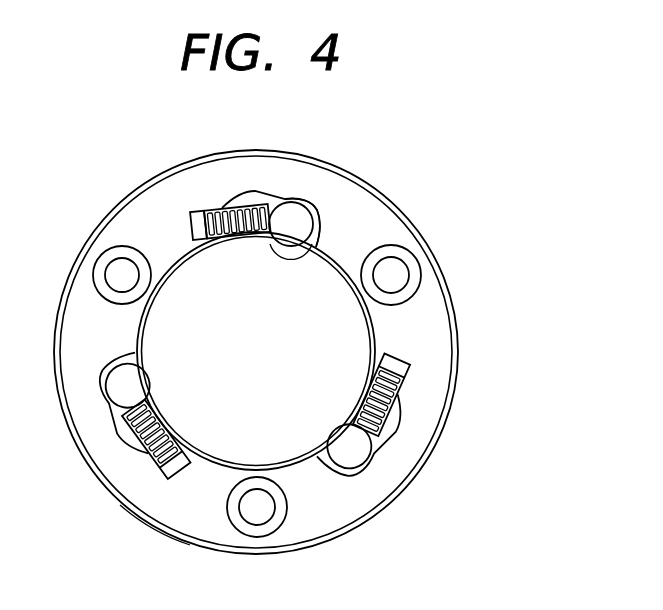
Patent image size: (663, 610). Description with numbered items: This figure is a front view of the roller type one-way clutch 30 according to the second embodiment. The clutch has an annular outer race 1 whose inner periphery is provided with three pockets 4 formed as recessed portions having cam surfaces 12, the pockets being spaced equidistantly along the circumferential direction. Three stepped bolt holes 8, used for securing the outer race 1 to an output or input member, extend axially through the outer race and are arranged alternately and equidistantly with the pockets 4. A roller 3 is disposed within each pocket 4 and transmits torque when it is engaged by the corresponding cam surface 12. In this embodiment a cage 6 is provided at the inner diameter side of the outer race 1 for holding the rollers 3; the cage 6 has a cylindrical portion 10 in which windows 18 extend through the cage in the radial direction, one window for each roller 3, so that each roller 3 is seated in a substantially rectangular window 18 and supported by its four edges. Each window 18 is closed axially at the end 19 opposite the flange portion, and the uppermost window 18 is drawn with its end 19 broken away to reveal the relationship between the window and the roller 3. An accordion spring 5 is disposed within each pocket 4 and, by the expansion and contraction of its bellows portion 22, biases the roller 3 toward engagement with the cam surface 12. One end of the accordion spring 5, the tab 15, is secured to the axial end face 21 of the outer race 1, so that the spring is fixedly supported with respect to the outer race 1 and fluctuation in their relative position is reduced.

The outer race 1 is at (131, 217).
The roller 3 is at (292, 203).
The pocket 4 is at (262, 196).
The accordion spring 5 is at (237, 208).
The cage 6 is at (375, 330).
The bolt hole 8 is at (272, 518).
The cylindrical portion 10 is at (170, 283).
The cam surface 12 is at (317, 208).
The tab 15 is at (200, 235).
The window 18 is at (303, 245).
The end 19 is at (140, 346).
The axial end face 21 is at (187, 512).
The bellows portion 22 is at (366, 382).
The roller type one-way clutch 30 is at (383, 157).